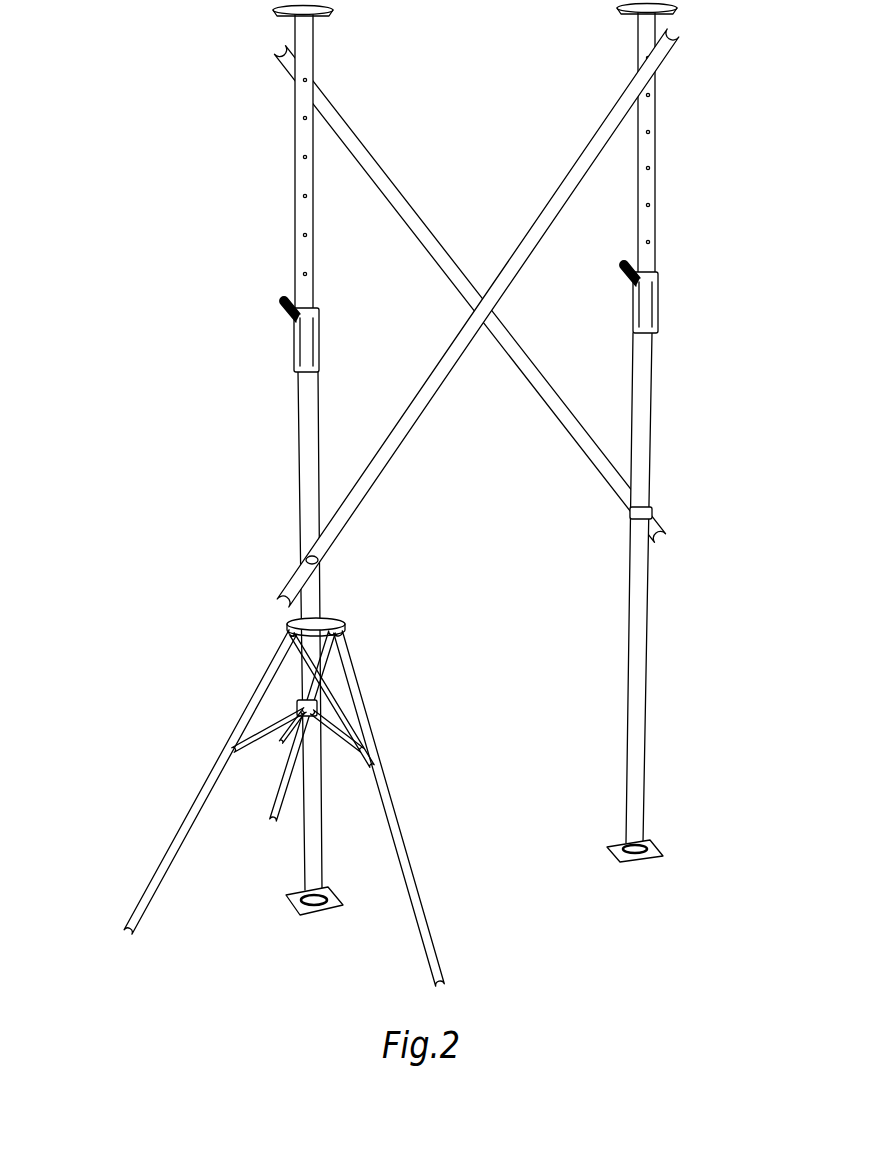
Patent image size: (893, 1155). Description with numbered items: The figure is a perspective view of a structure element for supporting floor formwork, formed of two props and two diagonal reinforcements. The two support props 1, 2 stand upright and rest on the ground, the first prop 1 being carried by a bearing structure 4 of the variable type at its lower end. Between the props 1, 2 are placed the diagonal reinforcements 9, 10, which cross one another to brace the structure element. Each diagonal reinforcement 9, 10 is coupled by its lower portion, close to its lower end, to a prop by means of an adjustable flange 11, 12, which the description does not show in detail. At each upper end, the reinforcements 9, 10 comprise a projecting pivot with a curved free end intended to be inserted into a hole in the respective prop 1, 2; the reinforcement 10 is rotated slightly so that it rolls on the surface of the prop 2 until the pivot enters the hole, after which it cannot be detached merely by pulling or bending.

The support prop 1 is at (313, 253).
The support prop 2 is at (656, 215).
The bearing structure 4 is at (158, 765).
The diagonal reinforcement 9 is at (360, 147).
The diagonal reinforcement 10 is at (425, 397).
The adjustable flange 11 is at (318, 560).
The adjustable flange 12 is at (652, 512).